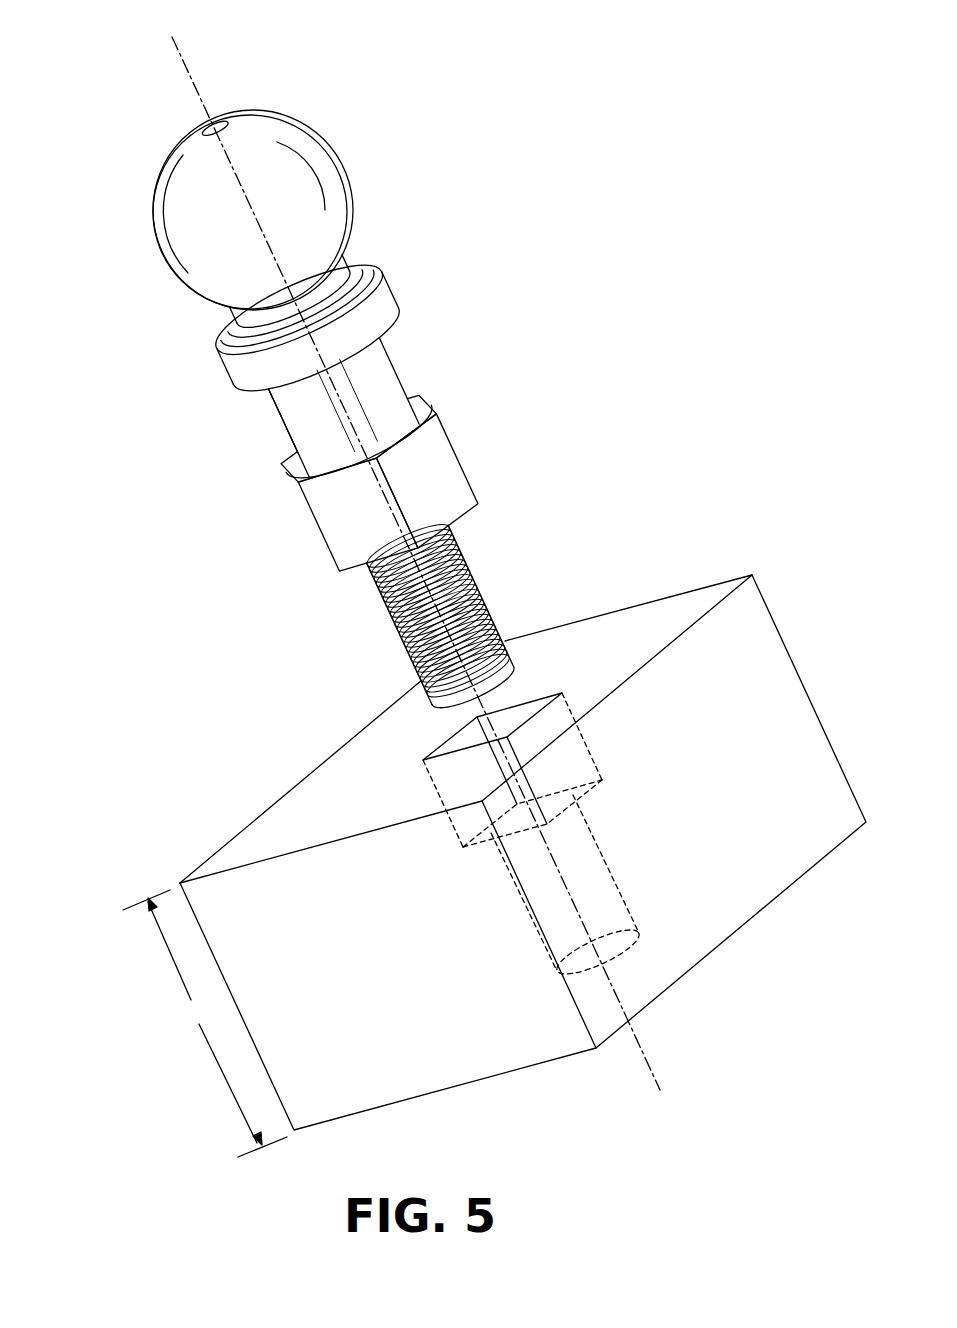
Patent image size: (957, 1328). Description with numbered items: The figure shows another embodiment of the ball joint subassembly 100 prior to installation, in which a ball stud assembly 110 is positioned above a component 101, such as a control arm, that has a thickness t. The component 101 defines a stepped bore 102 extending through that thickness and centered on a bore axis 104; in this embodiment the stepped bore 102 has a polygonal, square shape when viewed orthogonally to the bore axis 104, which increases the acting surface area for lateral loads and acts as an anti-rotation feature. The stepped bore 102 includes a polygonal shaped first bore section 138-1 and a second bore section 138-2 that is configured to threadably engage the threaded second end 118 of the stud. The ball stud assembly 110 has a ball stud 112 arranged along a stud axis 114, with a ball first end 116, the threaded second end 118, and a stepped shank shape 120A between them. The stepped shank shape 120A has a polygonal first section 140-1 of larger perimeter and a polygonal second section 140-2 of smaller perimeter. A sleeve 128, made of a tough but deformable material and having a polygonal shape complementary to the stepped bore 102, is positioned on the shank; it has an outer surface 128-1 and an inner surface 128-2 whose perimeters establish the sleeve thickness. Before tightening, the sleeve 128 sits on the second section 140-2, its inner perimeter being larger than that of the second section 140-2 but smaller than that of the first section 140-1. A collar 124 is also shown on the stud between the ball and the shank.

The ball joint subassembly 100 is at (456, 588).
The component 101 is at (494, 833).
The stepped bore 102 is at (583, 804).
The bore axis 104 is at (654, 1060).
The ball stud assembly 110 is at (335, 516).
The ball stud 112 is at (150, 210).
The stud axis 114 is at (188, 70).
The ball first end 116 is at (307, 147).
The threaded second end 118 is at (483, 620).
The stepped shank shape 120A is at (384, 398).
The flange collar 124 is at (386, 297).
The sleeve 128 is at (433, 455).
The outer surface 128-1 is at (438, 486).
The inner surface 128-2 is at (398, 430).
The first bore section 138-1 is at (573, 710).
The second bore section 138-2 is at (613, 862).
The first section 140-1 is at (284, 420).
The second section 140-2 is at (312, 481).